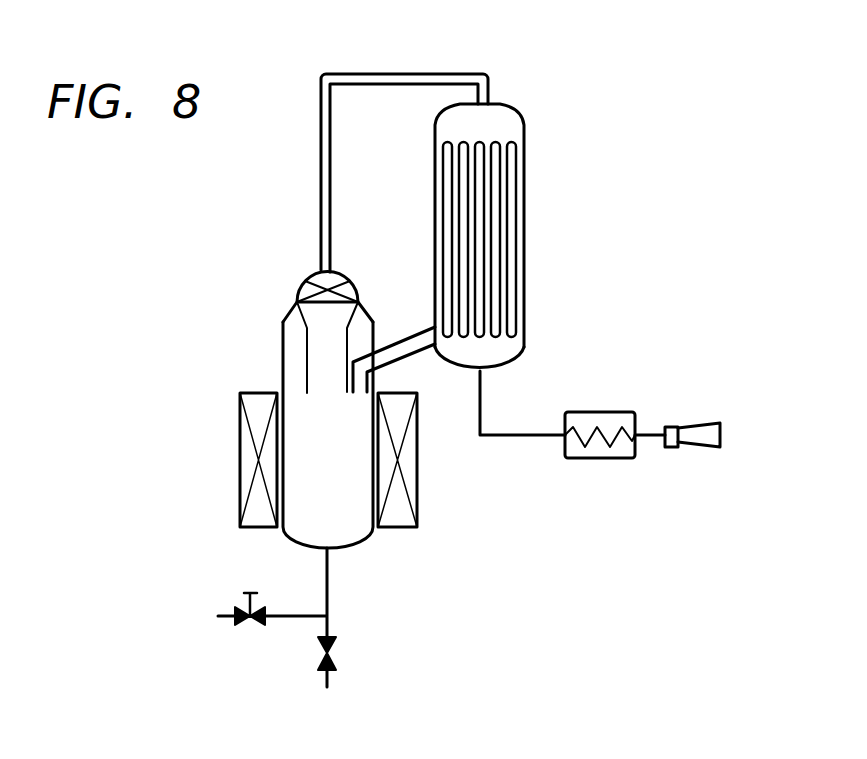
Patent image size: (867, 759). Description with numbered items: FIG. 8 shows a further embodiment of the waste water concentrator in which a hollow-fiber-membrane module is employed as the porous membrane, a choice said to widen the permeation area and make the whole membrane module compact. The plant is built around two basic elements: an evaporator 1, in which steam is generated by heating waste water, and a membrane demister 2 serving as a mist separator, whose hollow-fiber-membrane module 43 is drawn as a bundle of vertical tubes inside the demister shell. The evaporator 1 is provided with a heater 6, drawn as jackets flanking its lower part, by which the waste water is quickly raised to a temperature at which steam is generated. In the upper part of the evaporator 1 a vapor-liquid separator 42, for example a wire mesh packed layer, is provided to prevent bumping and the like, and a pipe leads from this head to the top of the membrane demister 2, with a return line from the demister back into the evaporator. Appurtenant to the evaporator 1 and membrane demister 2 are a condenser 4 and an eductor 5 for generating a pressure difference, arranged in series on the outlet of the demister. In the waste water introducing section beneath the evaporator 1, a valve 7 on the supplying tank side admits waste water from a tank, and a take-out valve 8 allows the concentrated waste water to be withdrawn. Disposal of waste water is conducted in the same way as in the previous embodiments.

The evaporator 1 is at (283, 366).
The membrane demister 2 is at (510, 105).
The condenser 4 is at (600, 412).
The eductor 5 is at (698, 425).
The heater 6 is at (240, 452).
The valve on the supplying tank side 7 is at (258, 624).
The take-out valve 8 is at (336, 645).
The vapor-liquid separator 42 is at (308, 285).
The condenser tubes 43 is at (515, 183).